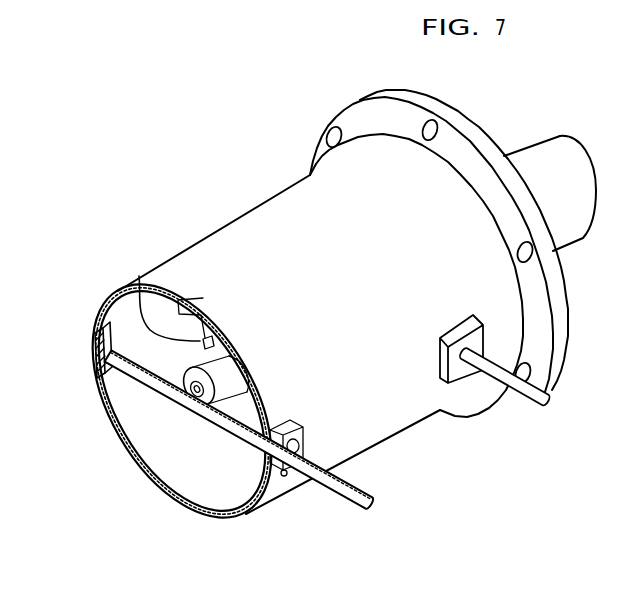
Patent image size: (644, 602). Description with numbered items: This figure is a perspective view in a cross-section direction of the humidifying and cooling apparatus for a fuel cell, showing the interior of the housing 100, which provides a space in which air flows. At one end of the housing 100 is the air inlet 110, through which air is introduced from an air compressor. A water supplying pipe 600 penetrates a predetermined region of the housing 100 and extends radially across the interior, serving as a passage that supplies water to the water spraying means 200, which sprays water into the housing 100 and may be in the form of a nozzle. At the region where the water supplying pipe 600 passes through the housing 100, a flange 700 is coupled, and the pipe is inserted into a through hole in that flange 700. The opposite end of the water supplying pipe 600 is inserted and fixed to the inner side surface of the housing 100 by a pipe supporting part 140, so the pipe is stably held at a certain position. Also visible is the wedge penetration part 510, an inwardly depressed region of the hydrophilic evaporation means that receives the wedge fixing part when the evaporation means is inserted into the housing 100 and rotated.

The housing 100 is at (295, 210).
The air inlet 110 is at (546, 150).
The pipe supporting part 140 is at (94, 340).
The water spraying means 200 is at (190, 366).
The wedge penetration part 510 is at (139, 276).
The water supplying pipe 600 is at (360, 505).
The flange 700 is at (284, 476).